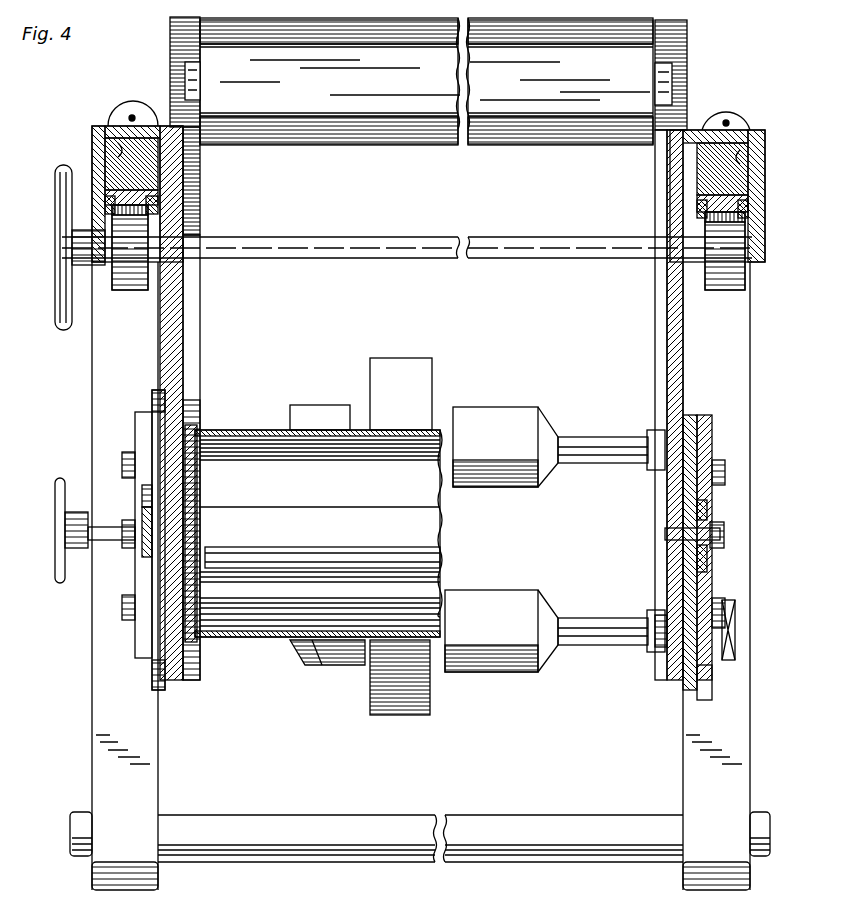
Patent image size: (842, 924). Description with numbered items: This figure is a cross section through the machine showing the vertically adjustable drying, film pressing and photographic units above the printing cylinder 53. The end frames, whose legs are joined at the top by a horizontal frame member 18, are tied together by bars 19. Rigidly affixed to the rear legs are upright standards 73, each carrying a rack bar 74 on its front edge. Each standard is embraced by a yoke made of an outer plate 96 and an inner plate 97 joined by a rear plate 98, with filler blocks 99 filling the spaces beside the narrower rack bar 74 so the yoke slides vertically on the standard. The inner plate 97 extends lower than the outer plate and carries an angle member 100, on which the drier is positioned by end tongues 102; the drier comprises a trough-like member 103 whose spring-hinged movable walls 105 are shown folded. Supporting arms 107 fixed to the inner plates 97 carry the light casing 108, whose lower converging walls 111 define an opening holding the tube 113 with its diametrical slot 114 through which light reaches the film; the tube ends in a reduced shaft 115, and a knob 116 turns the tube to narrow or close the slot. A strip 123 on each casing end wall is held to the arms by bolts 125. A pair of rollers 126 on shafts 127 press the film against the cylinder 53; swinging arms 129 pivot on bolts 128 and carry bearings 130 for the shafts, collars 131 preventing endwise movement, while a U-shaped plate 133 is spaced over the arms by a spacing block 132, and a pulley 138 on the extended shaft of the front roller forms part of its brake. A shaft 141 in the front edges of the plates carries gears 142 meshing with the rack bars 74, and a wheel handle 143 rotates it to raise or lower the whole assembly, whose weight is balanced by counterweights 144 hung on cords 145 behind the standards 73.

The horizontal frame member 18 is at (155, 773).
The bars 19 is at (332, 862).
The cylinder 53 is at (401, 715).
The upright standards 73 is at (104, 155).
The rack bar 74 is at (110, 196).
The outer plate 96 is at (118, 143).
The inner plate 97 is at (164, 160).
The rear plate 98 is at (146, 126).
The filler blocks 99 is at (105, 204).
The angle member 100 is at (200, 280).
The end tongues 102 is at (197, 77).
The trough-like member 103 is at (416, 62).
The movable walls 105 is at (367, 143).
The supporting arms 107 is at (176, 250).
The light casing 108 is at (328, 642).
The converging walls 111 is at (352, 452).
The tube 113 is at (283, 556).
The diametrical slot 114 is at (352, 543).
The reduced shaft 115 is at (160, 515).
The knob 116 is at (56, 495).
The strip 123 is at (140, 553).
The bolts 125 is at (722, 532).
The rollers 126 is at (302, 414).
The shafts 127 is at (572, 463).
The bolts 128 is at (122, 460).
The swinging arms 129 is at (160, 392).
The bearing 130 is at (662, 623).
The collars 131 is at (650, 432).
The spacing block 132 is at (697, 672).
The U-shaped plate 133 is at (135, 647).
The pulley 138 is at (738, 648).
The shaft 141 is at (409, 242).
The gears 142 is at (123, 282).
The wheel handle 143 is at (62, 245).
The counterweights 144 is at (113, 106).
The cords 145 is at (132, 118).